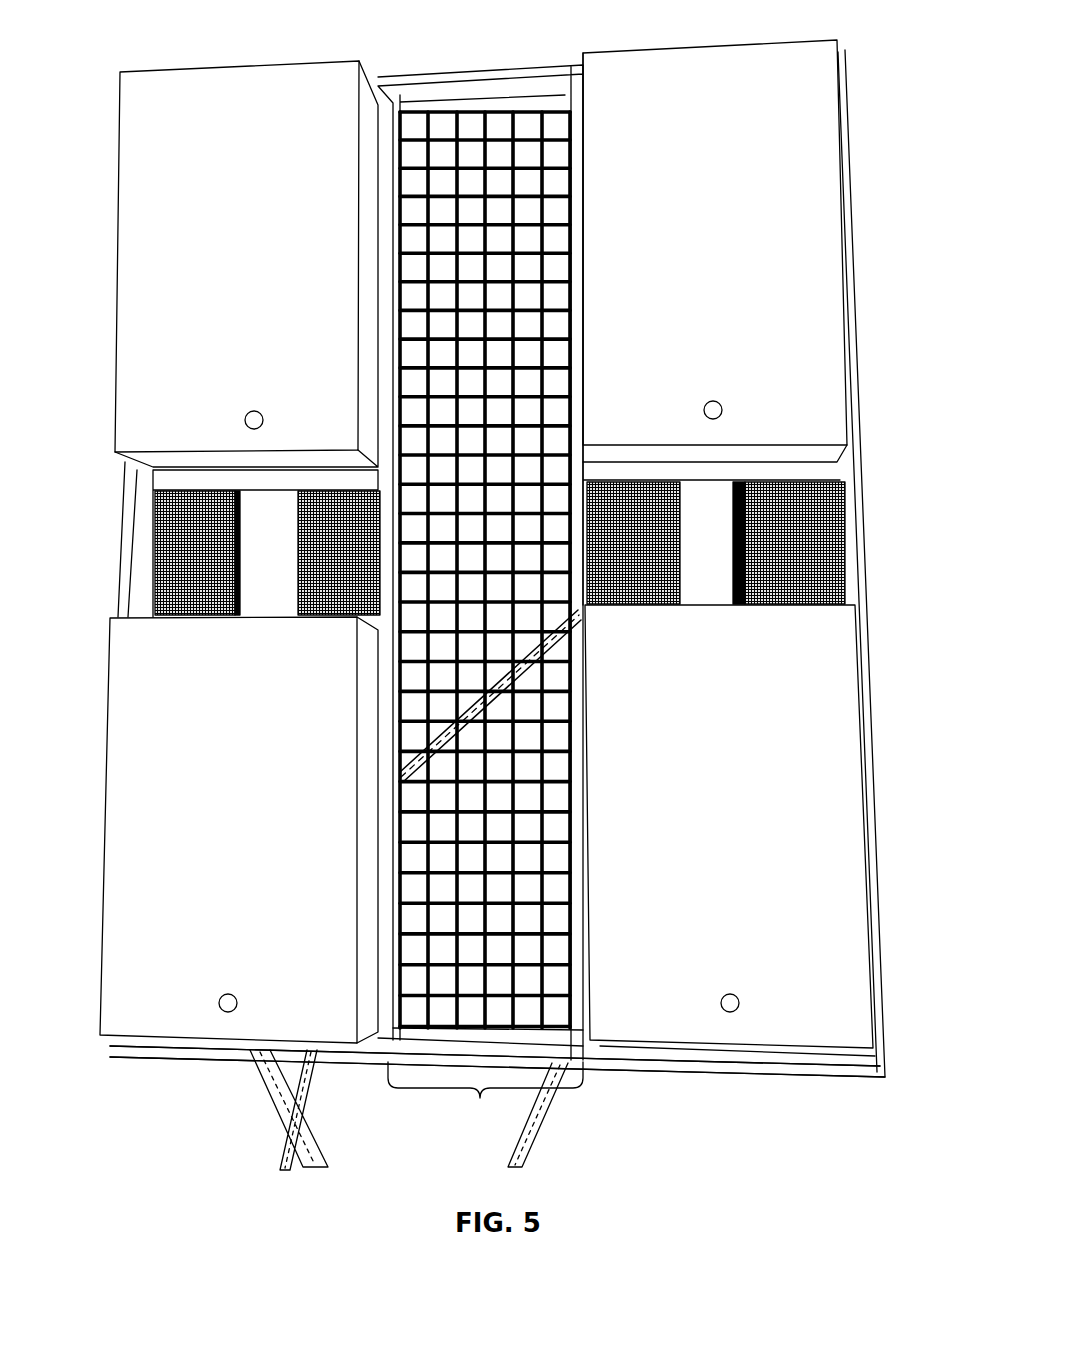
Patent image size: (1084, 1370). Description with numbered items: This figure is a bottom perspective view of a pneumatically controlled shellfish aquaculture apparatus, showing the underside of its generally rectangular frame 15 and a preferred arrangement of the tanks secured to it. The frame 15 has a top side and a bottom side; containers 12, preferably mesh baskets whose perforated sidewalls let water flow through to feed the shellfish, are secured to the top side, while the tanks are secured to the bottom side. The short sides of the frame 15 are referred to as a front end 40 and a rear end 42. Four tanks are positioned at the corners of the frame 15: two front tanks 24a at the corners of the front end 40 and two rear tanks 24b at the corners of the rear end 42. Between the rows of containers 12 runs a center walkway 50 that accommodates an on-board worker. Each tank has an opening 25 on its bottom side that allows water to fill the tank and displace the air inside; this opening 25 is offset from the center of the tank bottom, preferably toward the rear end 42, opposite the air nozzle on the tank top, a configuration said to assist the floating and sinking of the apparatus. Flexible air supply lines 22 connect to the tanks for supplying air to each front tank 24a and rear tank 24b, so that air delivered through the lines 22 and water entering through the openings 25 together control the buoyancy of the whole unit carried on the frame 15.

The front end 40 is at (483, 68).
The rear end 42 is at (780, 1072).
The frame 15 is at (650, 1068).
The center walkway 50 is at (480, 1100).
The front tank 24a is at (284, 232).
The rear tank 24b is at (260, 816).
The opening 25 is at (257, 411).
The container 12 is at (240, 505).
The air supply line 22 is at (272, 1128).